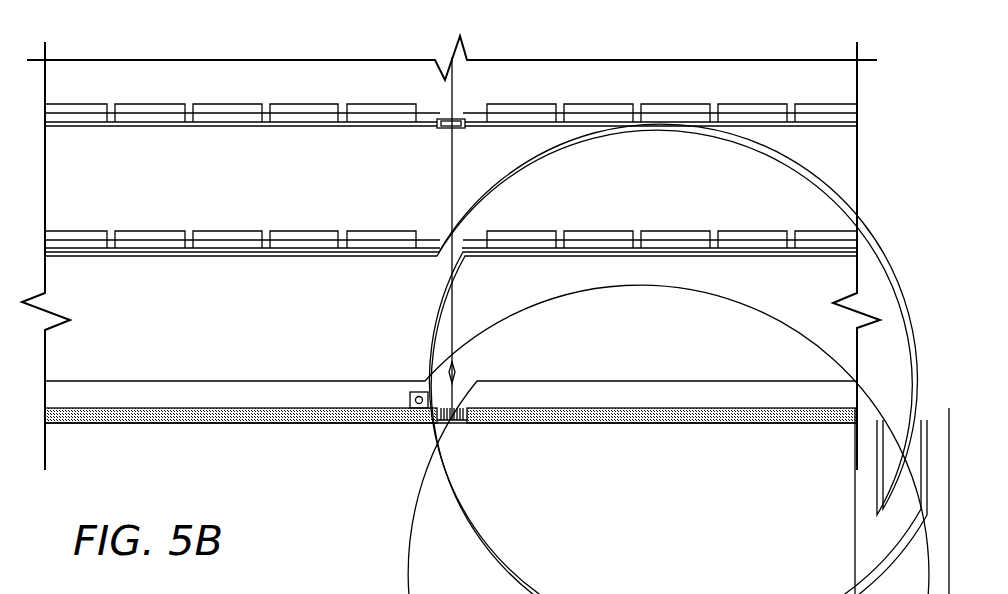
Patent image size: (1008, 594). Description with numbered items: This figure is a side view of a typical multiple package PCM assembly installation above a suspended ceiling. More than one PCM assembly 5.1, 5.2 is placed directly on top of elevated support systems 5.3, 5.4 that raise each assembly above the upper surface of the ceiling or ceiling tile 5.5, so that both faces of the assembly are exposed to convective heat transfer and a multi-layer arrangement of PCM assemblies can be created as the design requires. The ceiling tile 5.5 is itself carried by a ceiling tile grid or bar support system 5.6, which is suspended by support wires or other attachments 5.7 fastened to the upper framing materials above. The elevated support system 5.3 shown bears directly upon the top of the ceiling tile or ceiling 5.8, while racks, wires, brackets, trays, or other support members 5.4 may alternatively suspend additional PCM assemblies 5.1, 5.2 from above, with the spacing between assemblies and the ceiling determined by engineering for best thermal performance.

The PCM assembly 5.1 is at (304, 228).
The PCM assembly 5.2 is at (205, 109).
The elevated support system 5.3 is at (511, 270).
The support members 5.4 is at (464, 132).
The ceiling tile 5.5 is at (323, 437).
The ceiling tile grid or bar support system 5.6 is at (350, 382).
The support wires 5.7 is at (438, 90).
The top of the ceiling tile 5.8 is at (465, 409).